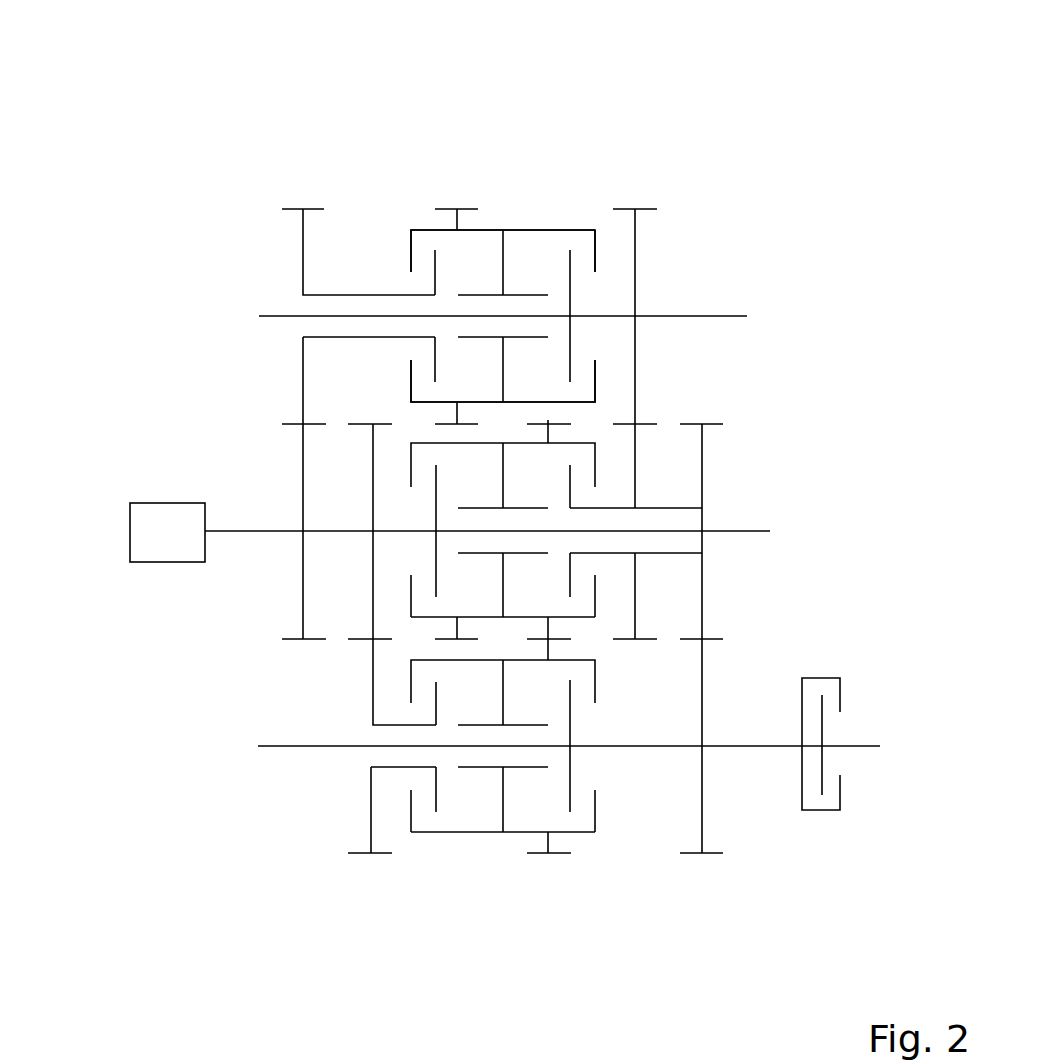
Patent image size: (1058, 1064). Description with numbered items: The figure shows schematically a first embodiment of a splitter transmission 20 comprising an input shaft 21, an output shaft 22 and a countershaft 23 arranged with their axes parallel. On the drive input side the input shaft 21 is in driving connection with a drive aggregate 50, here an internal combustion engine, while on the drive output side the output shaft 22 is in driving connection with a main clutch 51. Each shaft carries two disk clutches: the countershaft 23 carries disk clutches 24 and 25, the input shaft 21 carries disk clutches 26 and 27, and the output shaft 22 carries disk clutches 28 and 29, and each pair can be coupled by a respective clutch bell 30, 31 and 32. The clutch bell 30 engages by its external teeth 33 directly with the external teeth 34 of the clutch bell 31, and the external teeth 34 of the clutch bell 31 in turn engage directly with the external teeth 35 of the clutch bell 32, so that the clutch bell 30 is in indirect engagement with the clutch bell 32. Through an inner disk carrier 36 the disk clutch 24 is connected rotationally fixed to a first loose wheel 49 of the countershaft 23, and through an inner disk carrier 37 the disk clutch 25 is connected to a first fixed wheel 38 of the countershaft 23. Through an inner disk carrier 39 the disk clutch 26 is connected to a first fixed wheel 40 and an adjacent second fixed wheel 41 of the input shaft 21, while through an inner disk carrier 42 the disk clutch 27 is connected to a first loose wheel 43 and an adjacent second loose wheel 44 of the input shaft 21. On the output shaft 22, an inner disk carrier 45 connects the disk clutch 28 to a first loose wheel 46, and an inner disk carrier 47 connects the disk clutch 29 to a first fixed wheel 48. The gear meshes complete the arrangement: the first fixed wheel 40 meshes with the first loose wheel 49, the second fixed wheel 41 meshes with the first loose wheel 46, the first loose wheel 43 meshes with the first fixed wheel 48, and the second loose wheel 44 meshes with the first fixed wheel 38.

The splitter transmission 20 is at (193, 178).
The input shaft 21 is at (233, 533).
The output shaft 22 is at (296, 747).
The countershaft 23 is at (266, 312).
The disk clutch 24 is at (403, 287).
The disk clutch 25 is at (597, 283).
The disk clutch 26 is at (422, 497).
The disk clutch 27 is at (587, 487).
The disk clutch 28 is at (403, 795).
The disk clutch 29 is at (572, 712).
The clutch bell 30 is at (523, 228).
The clutch bell 31 is at (578, 618).
The clutch bell 32 is at (457, 833).
The external teeth 33 is at (446, 207).
The external teeth 34 is at (435, 423).
The external teeth 35 is at (557, 858).
The inner disk carrier 36 is at (435, 363).
The inner disk carrier 37 is at (572, 360).
The first fixed wheel 38 is at (635, 257).
The inner disk carrier 39 is at (371, 605).
The first fixed wheel 40 is at (303, 443).
The second fixed wheel 41 is at (412, 587).
The inner disk carrier 42 is at (572, 575).
The first loose wheel 43 is at (707, 442).
The second loose wheel 44 is at (638, 467).
The inner disk carrier 45 is at (435, 703).
The first loose wheel 46 is at (367, 682).
The inner disk carrier 47 is at (603, 795).
The first fixed wheel 48 is at (700, 840).
The first loose wheel 49 is at (303, 253).
The drive aggregate 50 is at (146, 537).
The main clutch 51 is at (852, 765).